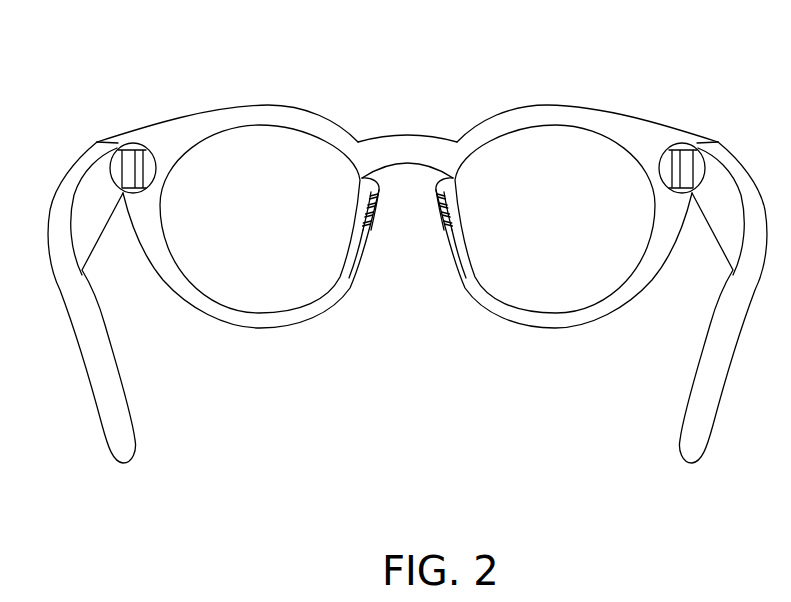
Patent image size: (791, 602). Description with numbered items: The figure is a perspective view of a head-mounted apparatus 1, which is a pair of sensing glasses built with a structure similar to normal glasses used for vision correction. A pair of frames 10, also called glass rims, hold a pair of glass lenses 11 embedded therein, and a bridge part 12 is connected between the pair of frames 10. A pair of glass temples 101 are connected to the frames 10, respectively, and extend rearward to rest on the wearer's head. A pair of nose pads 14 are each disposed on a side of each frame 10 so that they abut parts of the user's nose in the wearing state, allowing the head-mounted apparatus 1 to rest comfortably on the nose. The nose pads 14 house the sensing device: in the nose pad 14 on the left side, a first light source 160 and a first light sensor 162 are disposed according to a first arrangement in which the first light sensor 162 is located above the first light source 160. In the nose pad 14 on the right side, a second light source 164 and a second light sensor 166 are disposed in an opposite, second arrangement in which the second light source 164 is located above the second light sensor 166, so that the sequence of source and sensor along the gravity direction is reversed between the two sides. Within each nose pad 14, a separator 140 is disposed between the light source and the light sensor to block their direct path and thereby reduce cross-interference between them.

The head-mounted apparatus 1 is at (147, 74).
The frames 10 is at (212, 312).
The glass temples 101 is at (67, 293).
The glass lenses 11 is at (192, 268).
The bridge part 12 is at (404, 145).
The nose pads 14 is at (353, 175).
The separator 140 is at (378, 217).
The first light source 160 is at (360, 217).
The first light sensor 162 is at (363, 198).
The second light source 164 is at (460, 187).
The second light sensor 166 is at (452, 218).